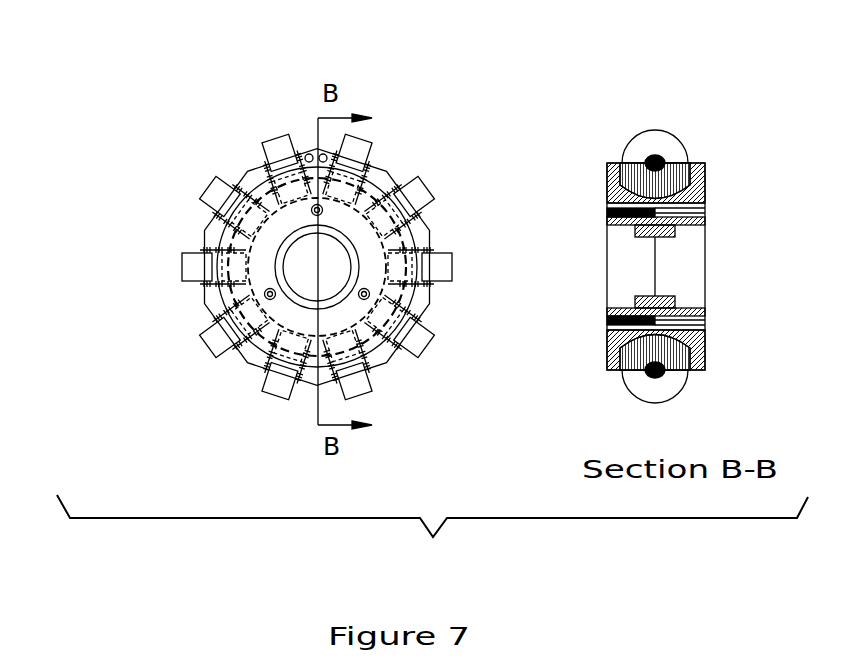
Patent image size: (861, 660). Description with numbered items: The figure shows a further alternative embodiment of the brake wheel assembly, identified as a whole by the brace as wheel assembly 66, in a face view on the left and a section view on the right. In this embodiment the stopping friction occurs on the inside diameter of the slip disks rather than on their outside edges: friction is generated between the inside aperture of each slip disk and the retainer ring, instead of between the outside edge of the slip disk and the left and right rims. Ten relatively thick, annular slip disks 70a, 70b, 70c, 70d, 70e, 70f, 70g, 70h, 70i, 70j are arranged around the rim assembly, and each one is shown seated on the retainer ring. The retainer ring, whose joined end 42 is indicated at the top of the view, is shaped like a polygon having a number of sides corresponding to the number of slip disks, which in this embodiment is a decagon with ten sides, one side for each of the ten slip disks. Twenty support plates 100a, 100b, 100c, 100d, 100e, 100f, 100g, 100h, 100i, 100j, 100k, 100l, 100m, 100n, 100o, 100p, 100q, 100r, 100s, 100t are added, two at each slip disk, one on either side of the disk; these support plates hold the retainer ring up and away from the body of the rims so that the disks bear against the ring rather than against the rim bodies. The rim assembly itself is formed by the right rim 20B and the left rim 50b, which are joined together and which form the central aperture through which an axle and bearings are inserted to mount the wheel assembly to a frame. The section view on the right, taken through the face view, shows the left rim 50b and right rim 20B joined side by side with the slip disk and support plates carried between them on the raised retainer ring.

The end of the retainer ring 42 is at (240, 168).
The wheel assembly 66 is at (432, 533).
The left rim 50b is at (606, 212).
The right rim 20B is at (705, 333).
The slip disk 70a is at (371, 141).
The slip disk 70b is at (431, 192).
The slip disk 70c is at (453, 262).
The slip disk 70d is at (427, 347).
The slip disk 70e is at (360, 396).
The slip disk 70f is at (275, 396).
The slip disk 70g is at (208, 347).
The slip disk 70h is at (182, 267).
The slip disk 70i is at (208, 188).
The slip disk 70j is at (262, 140).
The support plate 100a is at (340, 149).
The support plate 100b is at (371, 159).
The support plate 100c is at (405, 183).
The support plate 100d is at (424, 210).
The support plate 100e is at (437, 250).
The support plate 100f is at (437, 285).
The support plate 100g is at (424, 323).
The support plate 100h is at (371, 374).
The support plate 100i is at (404, 351).
The support plate 100j is at (339, 385).
The support plate 100k is at (298, 386).
The support plate 100l is at (264, 375).
The support plate 100m is at (231, 351).
The support plate 100n is at (212, 323).
The support plate 100o is at (199, 285).
The support plate 100p is at (199, 250).
The support plate 100q is at (212, 212).
The support plate 100r is at (232, 184).
The support plate 100s is at (265, 160).
The support plate 100t is at (297, 150).